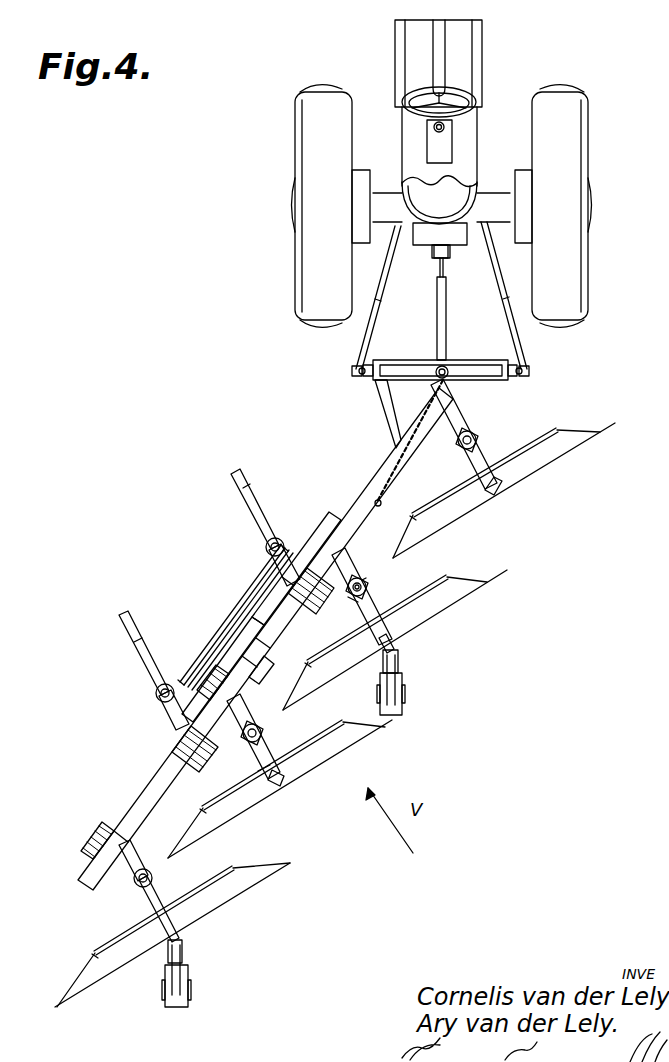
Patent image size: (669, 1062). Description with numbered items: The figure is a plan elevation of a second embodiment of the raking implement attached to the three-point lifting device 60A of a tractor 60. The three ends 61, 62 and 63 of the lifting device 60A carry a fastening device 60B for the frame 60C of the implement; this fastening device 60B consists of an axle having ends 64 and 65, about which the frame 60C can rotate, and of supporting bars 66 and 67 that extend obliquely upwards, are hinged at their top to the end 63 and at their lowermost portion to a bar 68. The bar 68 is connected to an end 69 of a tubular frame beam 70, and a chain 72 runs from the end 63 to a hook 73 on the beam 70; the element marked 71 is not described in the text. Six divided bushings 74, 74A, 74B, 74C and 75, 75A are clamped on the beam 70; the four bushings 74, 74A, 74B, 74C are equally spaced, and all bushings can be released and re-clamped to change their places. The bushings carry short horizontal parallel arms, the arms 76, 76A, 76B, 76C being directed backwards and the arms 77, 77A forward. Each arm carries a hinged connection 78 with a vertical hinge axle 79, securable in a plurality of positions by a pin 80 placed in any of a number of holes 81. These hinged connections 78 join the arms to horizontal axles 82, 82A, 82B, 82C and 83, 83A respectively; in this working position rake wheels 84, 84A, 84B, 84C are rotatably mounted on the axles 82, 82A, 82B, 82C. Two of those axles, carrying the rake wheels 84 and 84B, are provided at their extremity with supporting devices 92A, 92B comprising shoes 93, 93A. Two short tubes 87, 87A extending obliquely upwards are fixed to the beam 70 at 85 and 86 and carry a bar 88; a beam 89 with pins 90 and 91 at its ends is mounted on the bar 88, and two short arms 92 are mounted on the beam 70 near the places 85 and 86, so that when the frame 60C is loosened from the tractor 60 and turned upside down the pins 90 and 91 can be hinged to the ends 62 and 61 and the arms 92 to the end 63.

The tractor 60 is at (468, 147).
The three-point lifting device 60A is at (433, 303).
The fastening device 60B is at (433, 359).
The frame 60C is at (348, 485).
The end of three-point lifting device 61 is at (363, 372).
The end of three-point lifting device 62 is at (517, 372).
The end of three-point lifting device 63 is at (446, 353).
The axle end 64 is at (363, 381).
The axle end 65 is at (518, 380).
The supporting bar 66 is at (384, 362).
The supporting bar 67 is at (505, 362).
The bar 68 is at (420, 378).
The end of tubular frame beam 69 is at (453, 379).
The tubular frame beam 70 is at (401, 440).
The strut 71 is at (384, 411).
The chain 72 is at (399, 462).
The hook 73 is at (381, 503).
The divided bushing 74 is at (118, 866).
The divided bushing 74A is at (245, 741).
The divided bushing 74B is at (350, 590).
The divided bushing 74C is at (461, 447).
The divided bushing 75 is at (197, 756).
The divided bushing 75A is at (311, 605).
The short arm 76 is at (135, 852).
The short arm 76A is at (253, 723).
The short arm 76B is at (356, 559).
The short arm 76C is at (477, 434).
The short arm 77 is at (168, 737).
The short arm 77A is at (317, 540).
The hinged connection 78 is at (477, 443).
The vertical hinge axle 79 is at (353, 599).
The pin 80 is at (365, 587).
The holes 81 is at (366, 578).
The horizontal axle 82 is at (156, 884).
The horizontal axle 82A is at (278, 762).
The horizontal axle 82B is at (383, 628).
The horizontal axle 82C is at (484, 482).
The horizontal axle 83 is at (147, 650).
The horizontal axle 83A is at (253, 495).
The rake wheel 84 is at (237, 895).
The rake wheel 84A is at (345, 749).
The rake wheel 84B is at (461, 593).
The rake wheel 84C is at (570, 441).
The fixing place on beam 85 is at (231, 686).
The fixing place on beam 86 is at (270, 655).
The short tube 87 is at (214, 644).
The short tube 87A is at (243, 607).
The bar 88 is at (194, 677).
The beam 89 is at (230, 593).
The pin 90 is at (176, 725).
The pin 91 is at (285, 545).
The short arm 92 is at (254, 661).
The supporting device 92A is at (184, 951).
The supporting device 92B is at (405, 657).
The shoe 93 is at (188, 997).
The shoe 93A is at (409, 696).